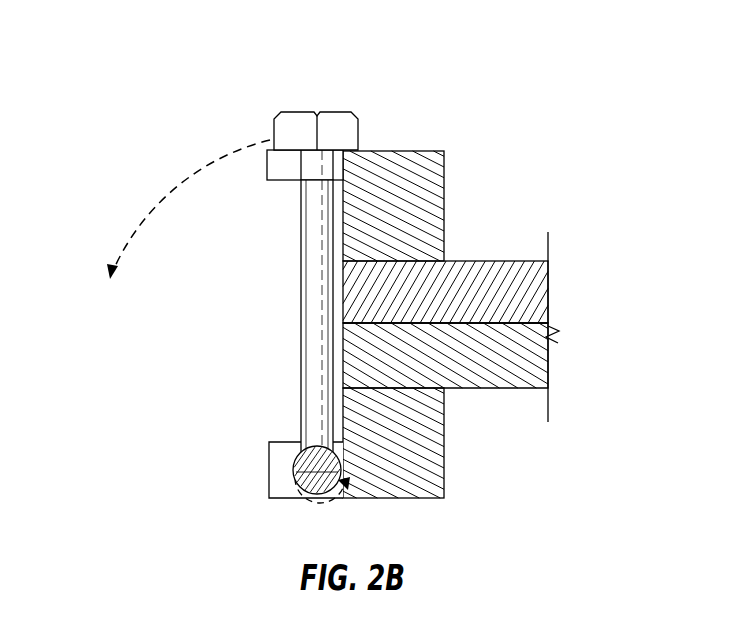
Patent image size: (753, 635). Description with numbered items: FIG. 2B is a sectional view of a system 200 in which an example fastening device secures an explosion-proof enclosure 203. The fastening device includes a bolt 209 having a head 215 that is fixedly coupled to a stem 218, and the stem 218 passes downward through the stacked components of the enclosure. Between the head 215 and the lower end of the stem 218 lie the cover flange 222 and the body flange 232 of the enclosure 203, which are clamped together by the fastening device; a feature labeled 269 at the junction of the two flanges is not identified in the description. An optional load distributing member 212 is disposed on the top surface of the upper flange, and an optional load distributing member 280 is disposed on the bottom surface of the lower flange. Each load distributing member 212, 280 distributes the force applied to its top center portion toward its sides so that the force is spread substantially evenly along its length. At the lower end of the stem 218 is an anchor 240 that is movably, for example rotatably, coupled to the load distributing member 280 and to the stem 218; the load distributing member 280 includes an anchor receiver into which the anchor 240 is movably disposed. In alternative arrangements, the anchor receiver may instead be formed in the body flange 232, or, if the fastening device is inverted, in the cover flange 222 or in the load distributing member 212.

The system 200 is at (145, 70).
The bolt 209 is at (331, 249).
The head 215 is at (350, 129).
The stem 218 is at (302, 335).
The load distributing member 212 is at (435, 178).
The cover flange 222 is at (495, 258).
The body flange 232 is at (537, 363).
The explosion-proof enclosure 203 is at (506, 314).
The interface between plates 269 is at (518, 325).
The load distributing member 280 is at (443, 452).
The anchor 240 is at (296, 464).